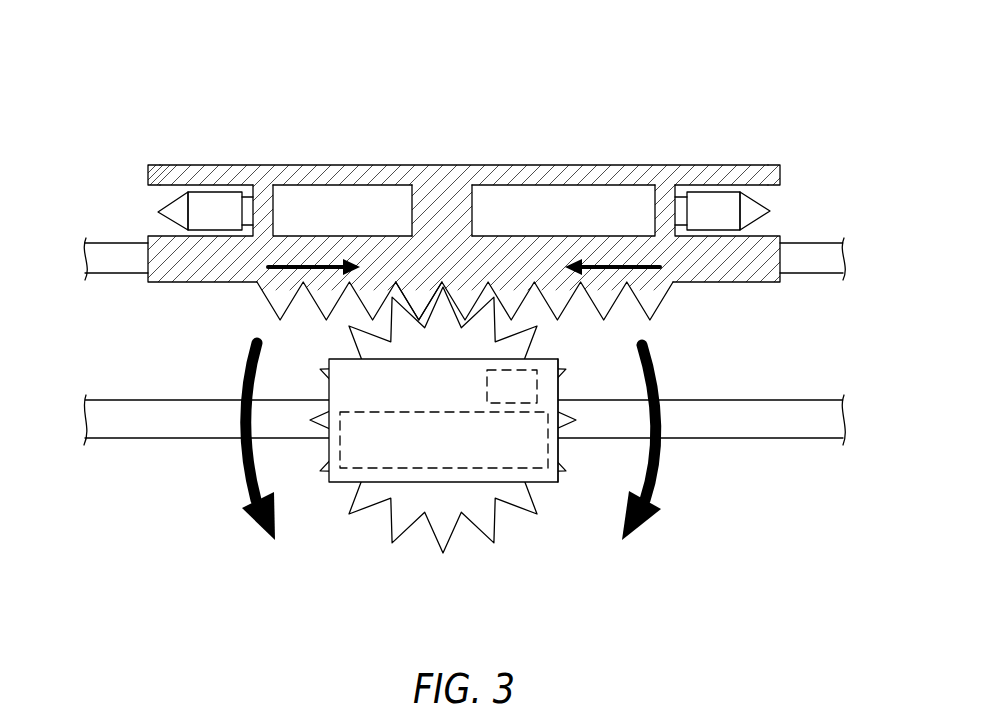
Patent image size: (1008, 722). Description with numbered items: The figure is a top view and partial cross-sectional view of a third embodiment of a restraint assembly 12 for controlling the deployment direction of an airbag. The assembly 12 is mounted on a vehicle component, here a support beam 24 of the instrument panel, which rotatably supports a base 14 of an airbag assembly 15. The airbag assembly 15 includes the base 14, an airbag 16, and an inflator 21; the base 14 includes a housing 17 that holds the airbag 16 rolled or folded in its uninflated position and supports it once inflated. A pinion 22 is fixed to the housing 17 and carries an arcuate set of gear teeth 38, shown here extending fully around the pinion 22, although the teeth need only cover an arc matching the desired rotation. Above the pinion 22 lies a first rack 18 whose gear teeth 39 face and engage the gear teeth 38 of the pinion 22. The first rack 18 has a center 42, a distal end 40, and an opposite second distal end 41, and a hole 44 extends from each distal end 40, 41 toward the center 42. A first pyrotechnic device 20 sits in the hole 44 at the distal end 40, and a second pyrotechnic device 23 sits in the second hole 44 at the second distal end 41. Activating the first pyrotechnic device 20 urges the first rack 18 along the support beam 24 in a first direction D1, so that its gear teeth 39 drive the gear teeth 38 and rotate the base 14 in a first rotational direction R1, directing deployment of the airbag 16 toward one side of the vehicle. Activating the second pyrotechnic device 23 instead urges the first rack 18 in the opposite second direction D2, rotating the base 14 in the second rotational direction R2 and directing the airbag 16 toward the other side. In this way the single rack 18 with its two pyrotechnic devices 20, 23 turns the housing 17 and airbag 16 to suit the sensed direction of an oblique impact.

The restraint assembly 12 is at (644, 64).
The base 14 is at (542, 482).
The airbag assembly 15 is at (605, 593).
The airbag 16 is at (455, 443).
The housing 17 is at (560, 447).
The first rack 18 is at (317, 173).
The first pyrotechnic device 20 is at (215, 202).
The inflator 21 is at (502, 390).
The pinion 22 is at (405, 512).
The second pyrotechnic device 23 is at (712, 203).
The support beam 24 is at (110, 257).
The gear teeth 38 is at (441, 314).
The gear teeth 39 is at (418, 296).
The distal end 40 is at (165, 177).
The second distal end 41 is at (763, 175).
The center 42 is at (427, 198).
The hole 44 is at (158, 225).
The first direction D1 is at (267, 283).
The second direction D2 is at (644, 273).
The first rotational direction R1 is at (660, 377).
The second rotational direction R2 is at (243, 377).